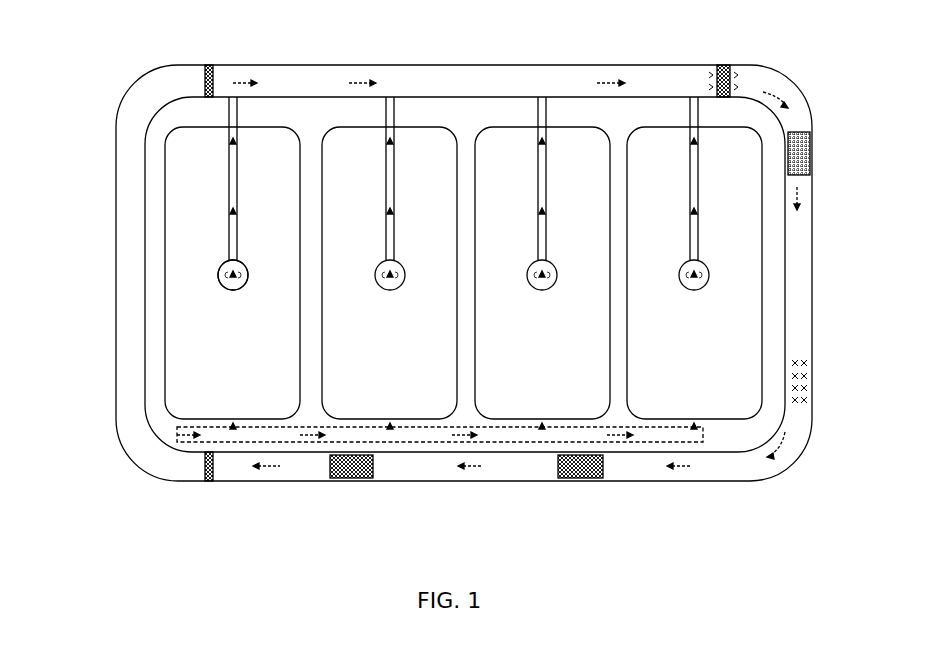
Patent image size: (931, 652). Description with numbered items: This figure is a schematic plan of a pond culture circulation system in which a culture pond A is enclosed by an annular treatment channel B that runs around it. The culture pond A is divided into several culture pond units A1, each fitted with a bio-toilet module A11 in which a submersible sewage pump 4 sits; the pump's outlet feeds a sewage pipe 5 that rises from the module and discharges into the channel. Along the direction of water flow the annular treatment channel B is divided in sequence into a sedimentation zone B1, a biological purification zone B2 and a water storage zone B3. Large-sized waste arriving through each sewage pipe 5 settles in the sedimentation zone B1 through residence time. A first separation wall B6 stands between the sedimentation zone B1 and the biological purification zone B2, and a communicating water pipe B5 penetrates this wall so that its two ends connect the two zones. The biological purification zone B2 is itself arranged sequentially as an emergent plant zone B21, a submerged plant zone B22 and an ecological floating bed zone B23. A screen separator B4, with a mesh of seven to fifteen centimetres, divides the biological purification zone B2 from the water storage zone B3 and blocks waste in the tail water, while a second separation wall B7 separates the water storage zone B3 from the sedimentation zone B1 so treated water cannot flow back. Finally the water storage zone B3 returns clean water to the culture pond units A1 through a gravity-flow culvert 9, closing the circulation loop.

The culture pond A is at (152, 277).
The culture pond unit A1 is at (208, 195).
The bio-toilet module A11 is at (219, 262).
The annular treatment channel B is at (116, 230).
The sedimentation zone B1 is at (429, 84).
The biological purification zone B2 is at (787, 323).
The water storage zone B3 is at (129, 246).
The screen separator B4 is at (205, 467).
The communicating water pipe B5 is at (731, 65).
The first separation wall B6 is at (720, 65).
The second separation wall B7 is at (212, 90).
The emergent plant zone B21 is at (811, 140).
The submerged plant zone B22 is at (813, 358).
The ecological floating bed zone B23 is at (348, 478).
The submersible sewage pump 4 is at (218, 277).
The sewage pipe 5 is at (230, 150).
The gravity-flow culvert 9 is at (177, 426).